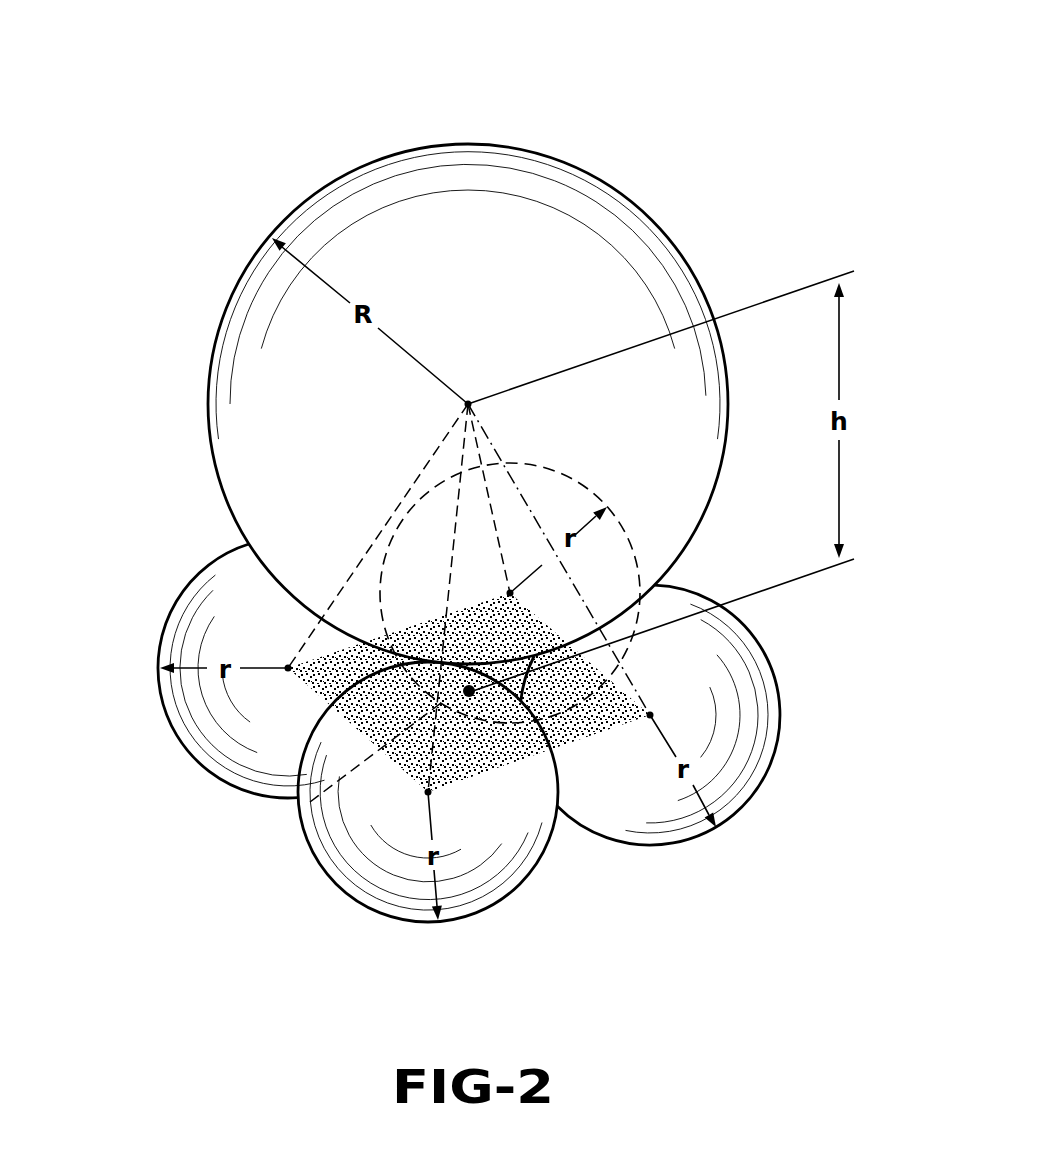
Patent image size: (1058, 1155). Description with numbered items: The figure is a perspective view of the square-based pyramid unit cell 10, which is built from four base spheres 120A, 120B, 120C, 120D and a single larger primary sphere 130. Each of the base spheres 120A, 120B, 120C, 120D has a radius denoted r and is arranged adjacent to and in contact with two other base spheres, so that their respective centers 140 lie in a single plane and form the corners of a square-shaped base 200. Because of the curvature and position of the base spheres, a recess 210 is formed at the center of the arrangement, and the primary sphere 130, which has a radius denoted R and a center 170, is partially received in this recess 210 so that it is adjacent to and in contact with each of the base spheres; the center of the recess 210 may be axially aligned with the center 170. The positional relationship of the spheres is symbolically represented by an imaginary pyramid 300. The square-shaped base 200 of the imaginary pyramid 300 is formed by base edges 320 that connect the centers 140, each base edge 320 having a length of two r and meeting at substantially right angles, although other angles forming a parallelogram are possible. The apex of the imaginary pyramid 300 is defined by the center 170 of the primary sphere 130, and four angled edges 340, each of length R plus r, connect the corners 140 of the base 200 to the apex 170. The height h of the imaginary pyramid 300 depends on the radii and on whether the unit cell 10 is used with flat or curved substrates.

The square-based pyramid unit cell 10 is at (715, 105).
The primary sphere 130 is at (617, 248).
The center of the primary sphere 170 is at (469, 403).
The base sphere 120A is at (183, 748).
The base sphere 120B is at (457, 923).
The base sphere 120C is at (632, 537).
The base sphere 120D is at (693, 840).
The centers of the base spheres 140 is at (288, 668).
The square-shaped base 200 is at (368, 753).
The recess 210 is at (493, 725).
The imaginary pyramid 300 is at (518, 432).
The base edges 320 is at (249, 544).
The angled edges 340 is at (512, 478).